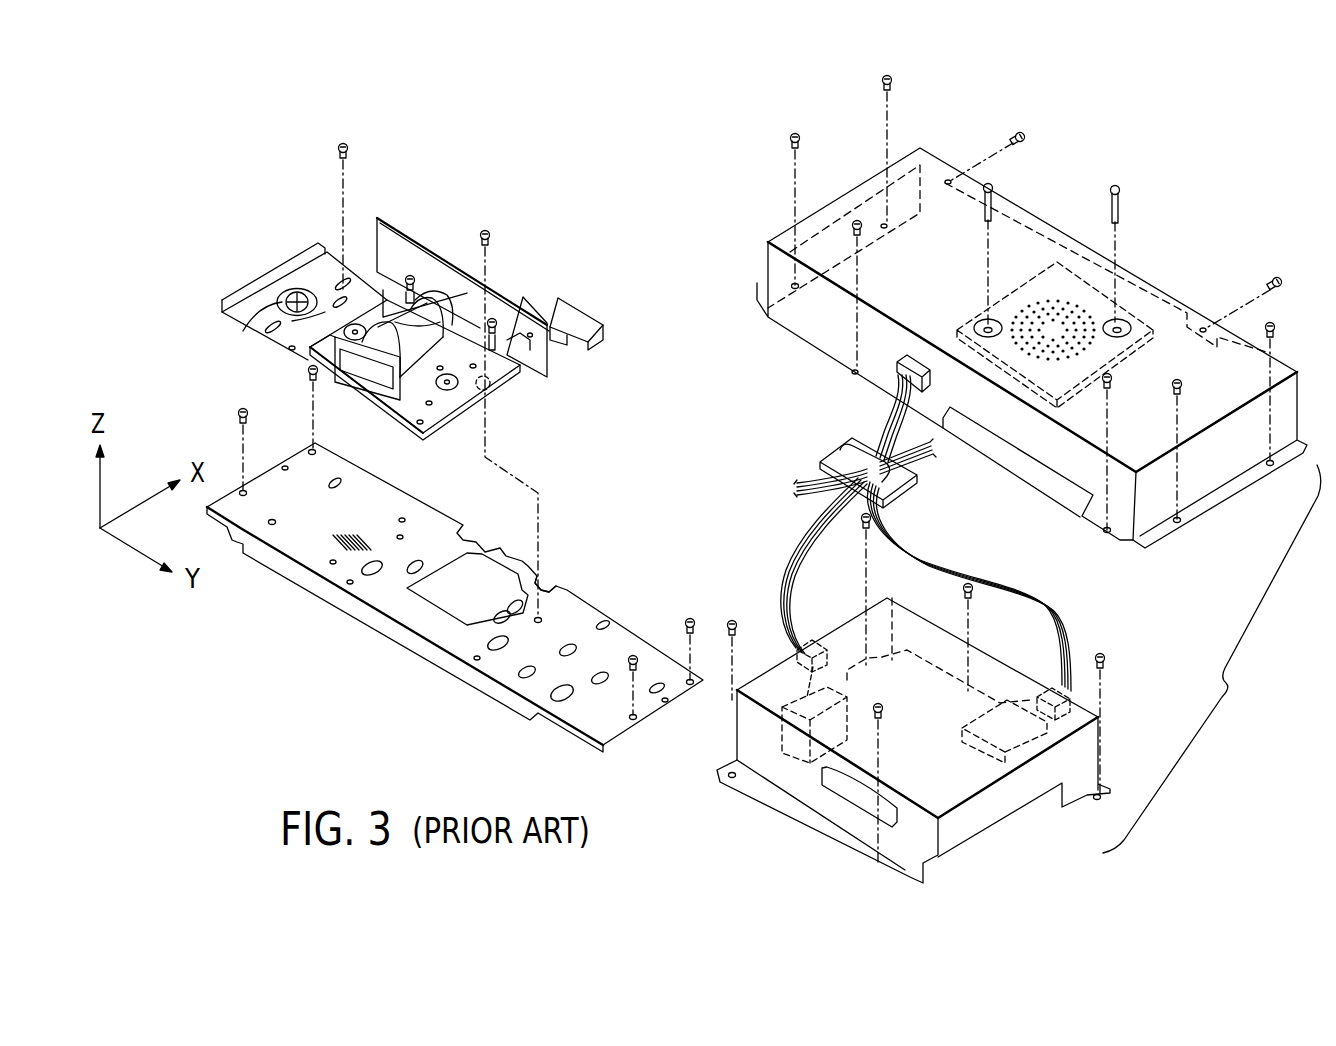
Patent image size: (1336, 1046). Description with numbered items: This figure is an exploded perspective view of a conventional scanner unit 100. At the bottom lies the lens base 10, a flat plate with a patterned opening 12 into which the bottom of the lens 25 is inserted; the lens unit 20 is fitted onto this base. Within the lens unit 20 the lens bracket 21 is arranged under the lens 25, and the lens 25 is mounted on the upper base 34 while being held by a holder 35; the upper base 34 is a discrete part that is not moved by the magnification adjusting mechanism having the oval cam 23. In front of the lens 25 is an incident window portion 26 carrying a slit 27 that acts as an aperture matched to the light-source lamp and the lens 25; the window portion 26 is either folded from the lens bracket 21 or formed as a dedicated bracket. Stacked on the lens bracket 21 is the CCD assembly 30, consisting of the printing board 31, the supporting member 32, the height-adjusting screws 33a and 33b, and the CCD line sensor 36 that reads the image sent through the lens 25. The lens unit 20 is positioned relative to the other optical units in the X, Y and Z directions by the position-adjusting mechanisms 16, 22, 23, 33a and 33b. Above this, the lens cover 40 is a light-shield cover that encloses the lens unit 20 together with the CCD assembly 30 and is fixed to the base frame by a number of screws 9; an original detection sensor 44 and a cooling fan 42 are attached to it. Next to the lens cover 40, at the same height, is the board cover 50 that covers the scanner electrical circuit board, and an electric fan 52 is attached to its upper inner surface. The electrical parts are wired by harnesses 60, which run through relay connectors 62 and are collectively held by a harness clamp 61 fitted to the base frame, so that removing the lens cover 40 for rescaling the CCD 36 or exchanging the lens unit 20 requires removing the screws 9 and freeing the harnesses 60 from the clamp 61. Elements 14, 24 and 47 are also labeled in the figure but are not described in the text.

The screws 9 is at (350, 146).
The lens base 10 is at (647, 720).
The patterned opening 12 is at (463, 603).
The notch 14 is at (540, 620).
The position-adjusting mechanism 16 is at (330, 541).
The lens unit 20 is at (363, 317).
The lens bracket 21 is at (257, 284).
The position-adjusting mechanism 22 is at (308, 320).
The oval cam 23 is at (250, 327).
The positioning hole 24 is at (417, 560).
The lens 25 is at (378, 352).
The incident window portion 26 is at (388, 402).
The slit 27 is at (373, 392).
The CCD assembly 30 is at (490, 281).
The printing board 31 is at (540, 360).
The supporting member 32 is at (447, 287).
The height-adjusting screw 33a is at (413, 275).
The height-adjusting screw 33b is at (497, 318).
The upper base 34 is at (322, 350).
The holder 35 is at (447, 393).
The CCD line sensor 36 is at (430, 293).
The lens cover 40 is at (1002, 807).
The cooling fan 42 is at (1030, 745).
The original detection sensor 44 is at (777, 745).
The opening 47 is at (847, 790).
The board cover 50 is at (1227, 473).
The electric fan 52 is at (1064, 280).
The harness 60 is at (573, 312).
The harness clamp 61 is at (907, 495).
The relay connector 62 is at (895, 377).
The scanner unit 100 is at (1212, 659).